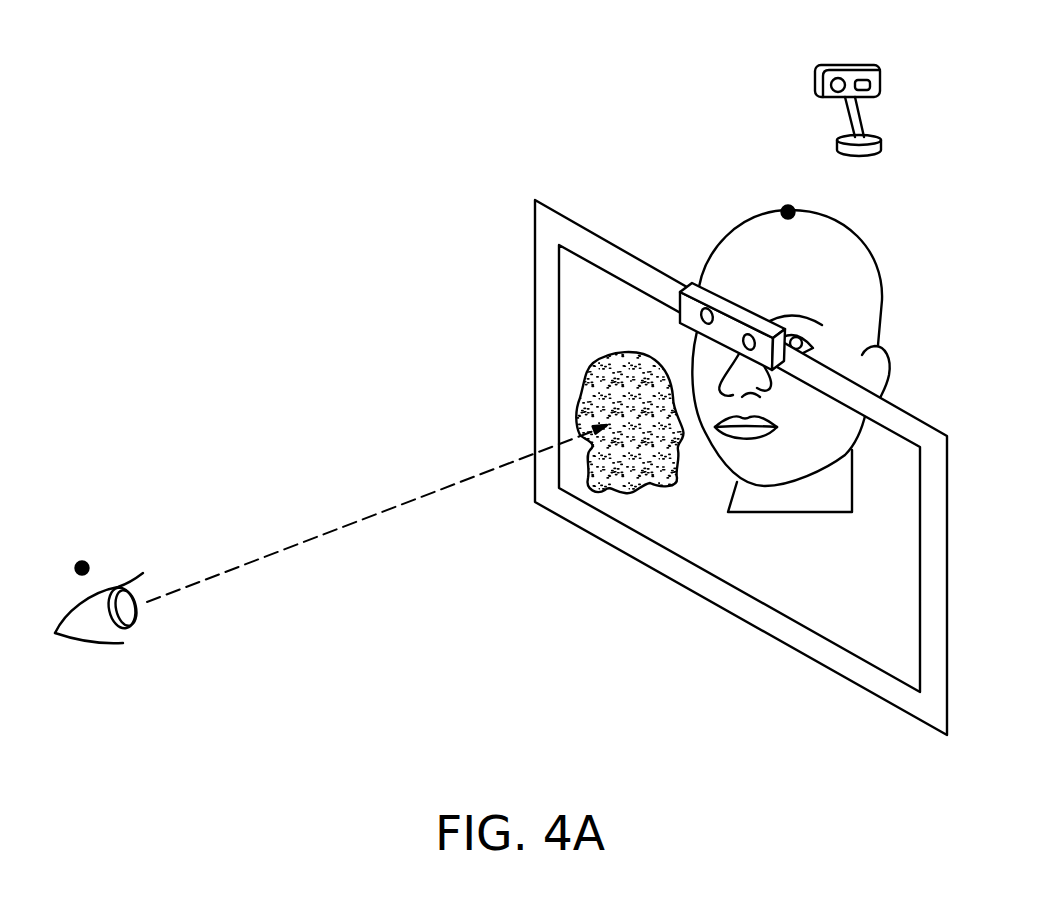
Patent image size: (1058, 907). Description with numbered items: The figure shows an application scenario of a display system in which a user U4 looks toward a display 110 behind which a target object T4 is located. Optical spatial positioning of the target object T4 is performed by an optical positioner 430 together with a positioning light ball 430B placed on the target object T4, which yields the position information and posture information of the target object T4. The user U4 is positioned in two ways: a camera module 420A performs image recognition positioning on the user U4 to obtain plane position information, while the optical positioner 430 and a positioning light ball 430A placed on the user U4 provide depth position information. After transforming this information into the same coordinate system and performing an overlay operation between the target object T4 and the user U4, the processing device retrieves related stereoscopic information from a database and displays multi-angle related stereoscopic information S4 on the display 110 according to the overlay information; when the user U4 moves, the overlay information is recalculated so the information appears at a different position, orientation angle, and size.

The display 110 is at (664, 563).
The camera module 420A is at (682, 296).
The optical positioner 430 is at (852, 68).
The positioning light ball 430A is at (82, 561).
The positioning light ball 430B is at (788, 206).
The target object T4 is at (829, 233).
The related stereoscopic information S4 is at (593, 388).
The user U4 is at (90, 645).